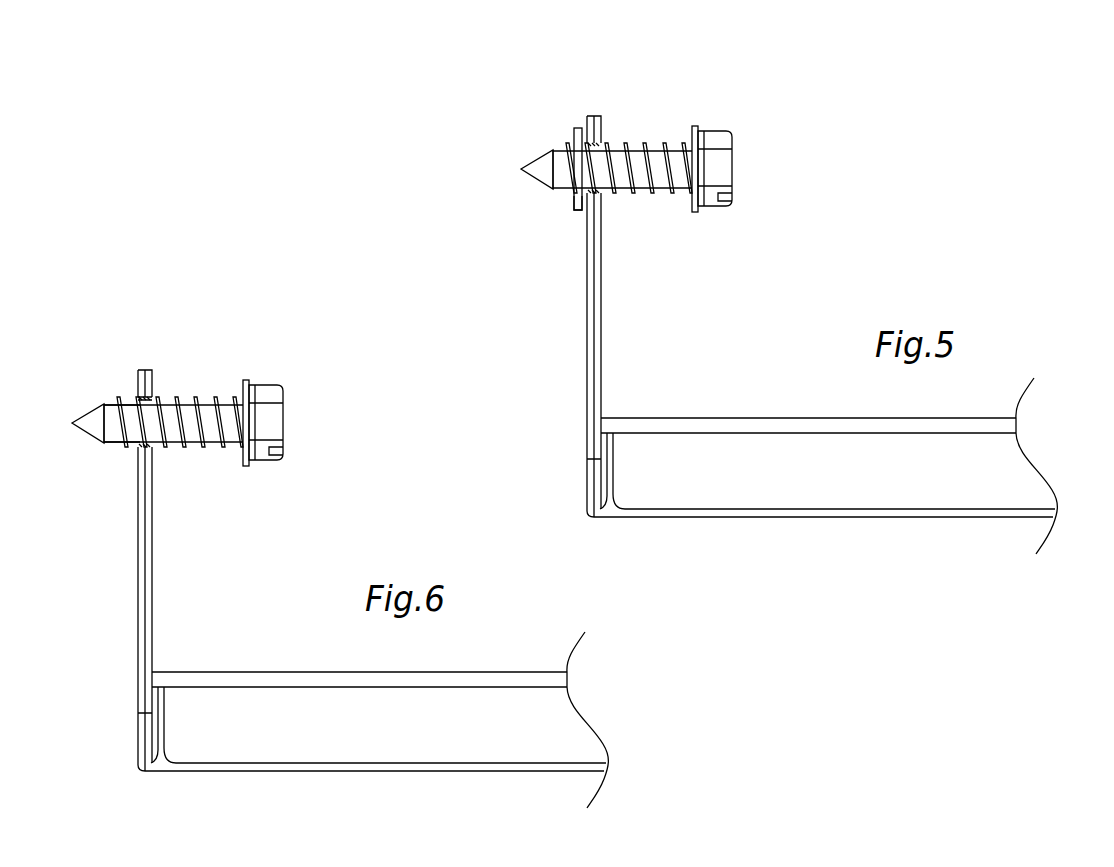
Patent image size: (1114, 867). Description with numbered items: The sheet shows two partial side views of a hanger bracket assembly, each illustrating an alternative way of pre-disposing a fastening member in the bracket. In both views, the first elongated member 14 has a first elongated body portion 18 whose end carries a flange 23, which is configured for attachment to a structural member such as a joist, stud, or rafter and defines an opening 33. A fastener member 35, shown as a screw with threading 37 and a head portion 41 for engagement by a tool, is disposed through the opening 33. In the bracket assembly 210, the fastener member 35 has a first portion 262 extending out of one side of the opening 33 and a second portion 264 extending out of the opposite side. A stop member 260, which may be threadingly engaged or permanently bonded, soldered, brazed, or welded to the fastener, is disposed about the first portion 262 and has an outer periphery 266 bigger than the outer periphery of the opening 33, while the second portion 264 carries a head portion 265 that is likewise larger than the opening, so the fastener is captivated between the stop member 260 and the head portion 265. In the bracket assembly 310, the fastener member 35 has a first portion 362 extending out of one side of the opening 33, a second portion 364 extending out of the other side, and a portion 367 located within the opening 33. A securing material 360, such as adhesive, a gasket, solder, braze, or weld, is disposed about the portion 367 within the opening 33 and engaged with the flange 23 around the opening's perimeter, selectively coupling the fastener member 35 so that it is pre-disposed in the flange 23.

In FIG. 5, the first elongated member 14 is at (689, 525).
In FIG. 6, the first elongated member 14 is at (240, 777).
In FIG. 5, the first elongated body portion 18 is at (779, 520).
In FIG. 6, the first elongated body portion 18 is at (330, 774).
In FIG. 5, the flange 23 is at (585, 333).
In FIG. 6, the flange 23 is at (137, 586).
In FIG. 5, the opening 33 is at (602, 132).
In FIG. 6, the opening 33 is at (151, 396).
In FIG. 5, the fastener member 35 is at (735, 127).
In FIG. 6, the fastener member 35 is at (238, 381).
In FIG. 5, the threading 37 is at (655, 143).
In FIG. 6, the threading 37 is at (199, 399).
In FIG. 5, the head portion 41 is at (716, 209).
In FIG. 6, the head portion 41 is at (285, 423).
In FIG. 5, the bracket assembly 210 is at (812, 252).
In FIG. 5, the stop member 260 is at (573, 135).
In FIG. 5, the first portion 262 is at (558, 192).
In FIG. 5, the second portion 264 is at (672, 145).
In FIG. 5, the head portion 265 is at (720, 172).
In FIG. 5, the outer periphery 266 is at (578, 212).
In FIG. 6, the bracket assembly 310 is at (340, 538).
In FIG. 6, the securing material 360 is at (137, 397).
In FIG. 6, the first portion 362 is at (103, 441).
In FIG. 6, the second portion 364 is at (207, 452).
In FIG. 6, the portion disposed within the opening 367 is at (152, 428).